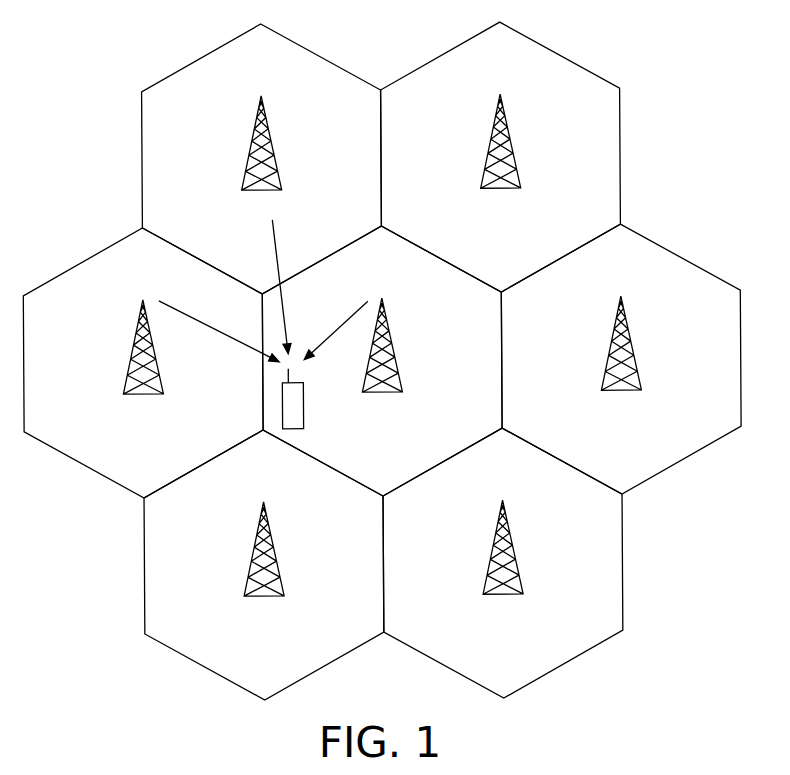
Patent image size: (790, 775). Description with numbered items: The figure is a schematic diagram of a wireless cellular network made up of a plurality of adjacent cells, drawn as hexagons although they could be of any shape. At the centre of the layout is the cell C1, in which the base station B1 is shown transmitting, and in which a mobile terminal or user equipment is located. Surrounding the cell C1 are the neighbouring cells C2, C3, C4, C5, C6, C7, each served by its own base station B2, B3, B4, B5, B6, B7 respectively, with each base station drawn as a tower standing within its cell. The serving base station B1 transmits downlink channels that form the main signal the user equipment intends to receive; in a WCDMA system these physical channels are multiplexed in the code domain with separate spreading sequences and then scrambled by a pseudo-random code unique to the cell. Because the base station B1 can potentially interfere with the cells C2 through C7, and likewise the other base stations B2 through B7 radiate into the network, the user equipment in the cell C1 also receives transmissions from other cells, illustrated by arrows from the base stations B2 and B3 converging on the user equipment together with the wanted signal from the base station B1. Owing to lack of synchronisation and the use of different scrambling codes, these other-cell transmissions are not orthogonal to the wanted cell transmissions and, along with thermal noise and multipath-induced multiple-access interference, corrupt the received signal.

The cell C1 is at (382, 361).
The cell C2 is at (261, 159).
The cell C3 is at (143, 363).
The cell C4 is at (264, 565).
The cell C5 is at (503, 563).
The cell C6 is at (621, 359).
The cell C7 is at (500, 157).
The base station B1 is at (382, 358).
The base station B2 is at (261, 156).
The base station B3 is at (143, 360).
The base station B4 is at (264, 562).
The base station B5 is at (503, 560).
The base station B6 is at (621, 356).
The base station B7 is at (500, 154).